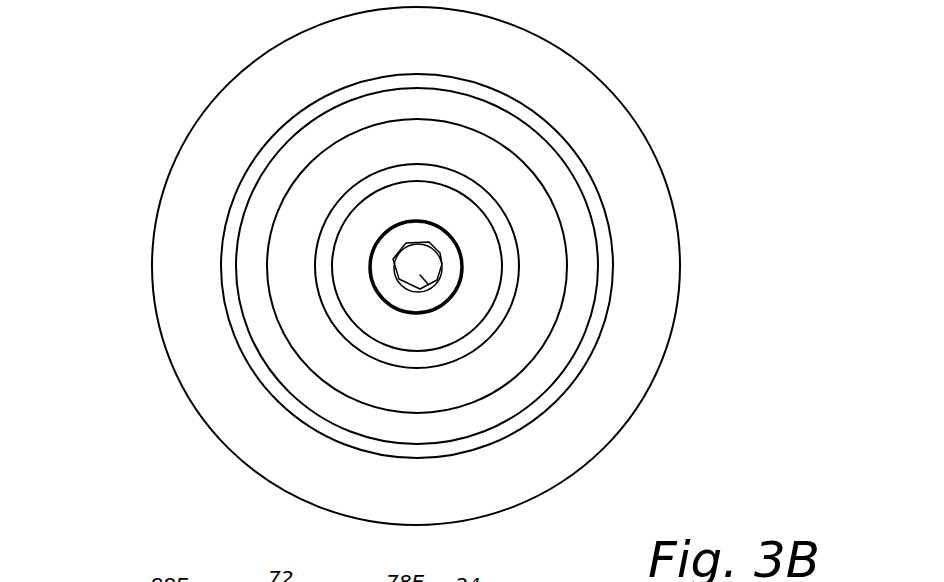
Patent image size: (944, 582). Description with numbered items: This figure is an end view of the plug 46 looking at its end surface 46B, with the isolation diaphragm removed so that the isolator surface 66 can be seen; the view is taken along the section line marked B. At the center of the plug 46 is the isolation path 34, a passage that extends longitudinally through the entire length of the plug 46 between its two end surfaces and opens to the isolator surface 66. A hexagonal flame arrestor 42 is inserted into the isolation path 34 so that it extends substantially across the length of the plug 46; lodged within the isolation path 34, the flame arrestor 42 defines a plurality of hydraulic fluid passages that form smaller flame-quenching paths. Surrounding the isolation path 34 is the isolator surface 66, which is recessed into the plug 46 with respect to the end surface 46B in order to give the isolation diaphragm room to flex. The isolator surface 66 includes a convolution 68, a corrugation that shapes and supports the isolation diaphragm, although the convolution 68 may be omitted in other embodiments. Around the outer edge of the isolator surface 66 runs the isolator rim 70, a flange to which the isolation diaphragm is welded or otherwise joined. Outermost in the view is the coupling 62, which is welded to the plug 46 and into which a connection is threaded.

The isolation path 34 is at (427, 242).
The hexagonal flame arrestor 42 is at (433, 284).
The plug 46 is at (524, 94).
The end surface 46B is at (503, 184).
The coupling 62 is at (597, 428).
The isolator surface 66 is at (286, 318).
The convolution 68 is at (325, 237).
The isolator rim 70 is at (334, 408).
The section view designator B is at (378, 238).